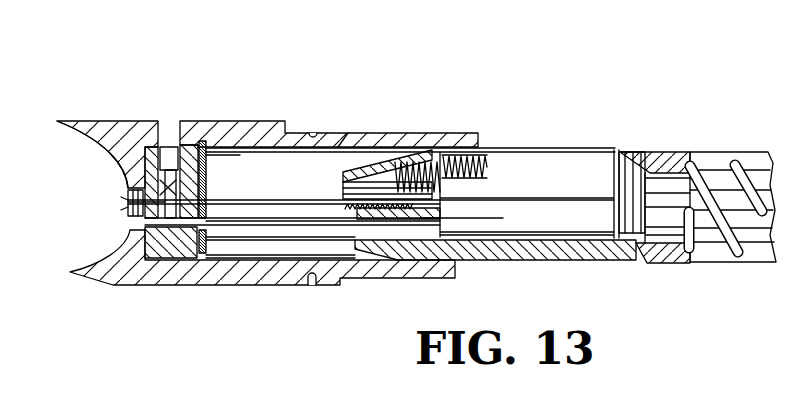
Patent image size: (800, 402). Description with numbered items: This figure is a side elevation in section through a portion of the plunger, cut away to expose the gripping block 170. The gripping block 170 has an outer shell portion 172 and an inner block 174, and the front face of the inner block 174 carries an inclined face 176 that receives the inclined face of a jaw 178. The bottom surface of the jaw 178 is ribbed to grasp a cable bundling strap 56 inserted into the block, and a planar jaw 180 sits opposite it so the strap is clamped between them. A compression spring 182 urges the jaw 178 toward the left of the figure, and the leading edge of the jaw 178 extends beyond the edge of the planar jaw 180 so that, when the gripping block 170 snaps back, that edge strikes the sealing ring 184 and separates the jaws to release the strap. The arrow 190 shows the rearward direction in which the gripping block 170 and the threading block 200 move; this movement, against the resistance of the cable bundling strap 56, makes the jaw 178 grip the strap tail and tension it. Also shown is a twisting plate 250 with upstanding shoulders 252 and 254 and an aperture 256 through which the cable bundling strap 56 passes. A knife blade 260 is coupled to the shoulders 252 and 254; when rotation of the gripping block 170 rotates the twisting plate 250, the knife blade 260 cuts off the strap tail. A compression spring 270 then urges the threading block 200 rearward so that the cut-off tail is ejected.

The cable bundling strap 56 is at (270, 197).
The gripping block 170 is at (527, 137).
The outer shell portion 172 is at (555, 253).
The inner block 174 is at (530, 170).
The inclined face 176 is at (348, 170).
The jaw 178 is at (396, 182).
The planar jaw 180 is at (383, 215).
The compression spring 182 is at (468, 155).
The sealing ring 184 is at (207, 182).
The arrow 190 is at (543, 133).
The threading block 200 is at (229, 285).
The twisting plate 250 is at (160, 270).
The upstanding shoulder 252 is at (157, 146).
The upstanding shoulder 254 is at (186, 145).
The aperture 256 is at (129, 213).
The knife blade 260 is at (125, 183).
The compression spring 270 is at (758, 152).